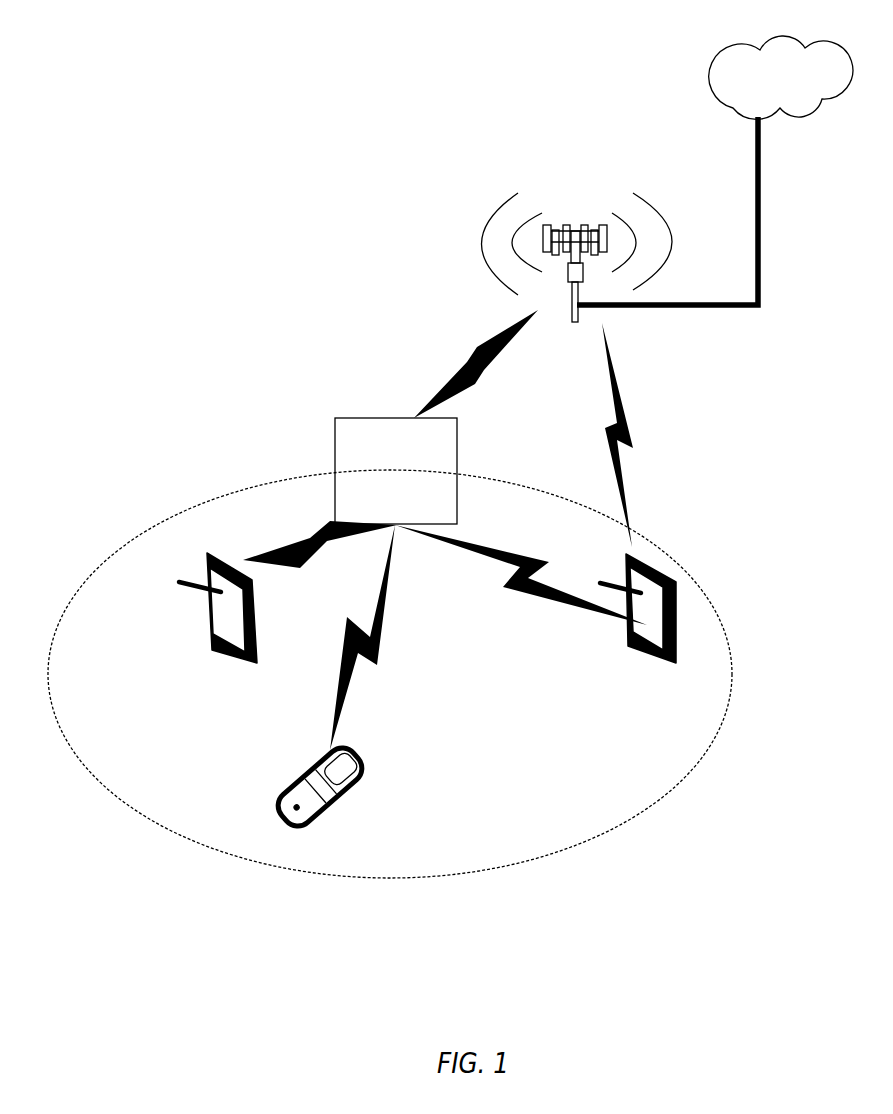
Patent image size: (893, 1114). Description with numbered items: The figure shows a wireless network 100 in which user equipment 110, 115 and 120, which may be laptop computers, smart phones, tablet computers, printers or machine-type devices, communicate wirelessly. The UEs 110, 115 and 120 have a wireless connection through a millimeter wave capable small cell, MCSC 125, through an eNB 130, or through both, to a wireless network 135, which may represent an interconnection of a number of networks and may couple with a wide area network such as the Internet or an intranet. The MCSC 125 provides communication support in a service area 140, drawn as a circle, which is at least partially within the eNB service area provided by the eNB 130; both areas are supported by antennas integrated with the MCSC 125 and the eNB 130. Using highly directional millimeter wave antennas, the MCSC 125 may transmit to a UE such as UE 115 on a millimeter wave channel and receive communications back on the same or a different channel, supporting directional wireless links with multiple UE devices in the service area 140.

The wireless network 100 is at (195, 50).
The user equipment 110 is at (313, 783).
The user equipment 115 is at (660, 572).
The user equipment 120 is at (183, 577).
The millimeter wave capable small cell (MCSC) 125 is at (367, 417).
The eNB 130 is at (583, 215).
The wireless network 135 is at (724, 50).
The service area 140 is at (240, 485).